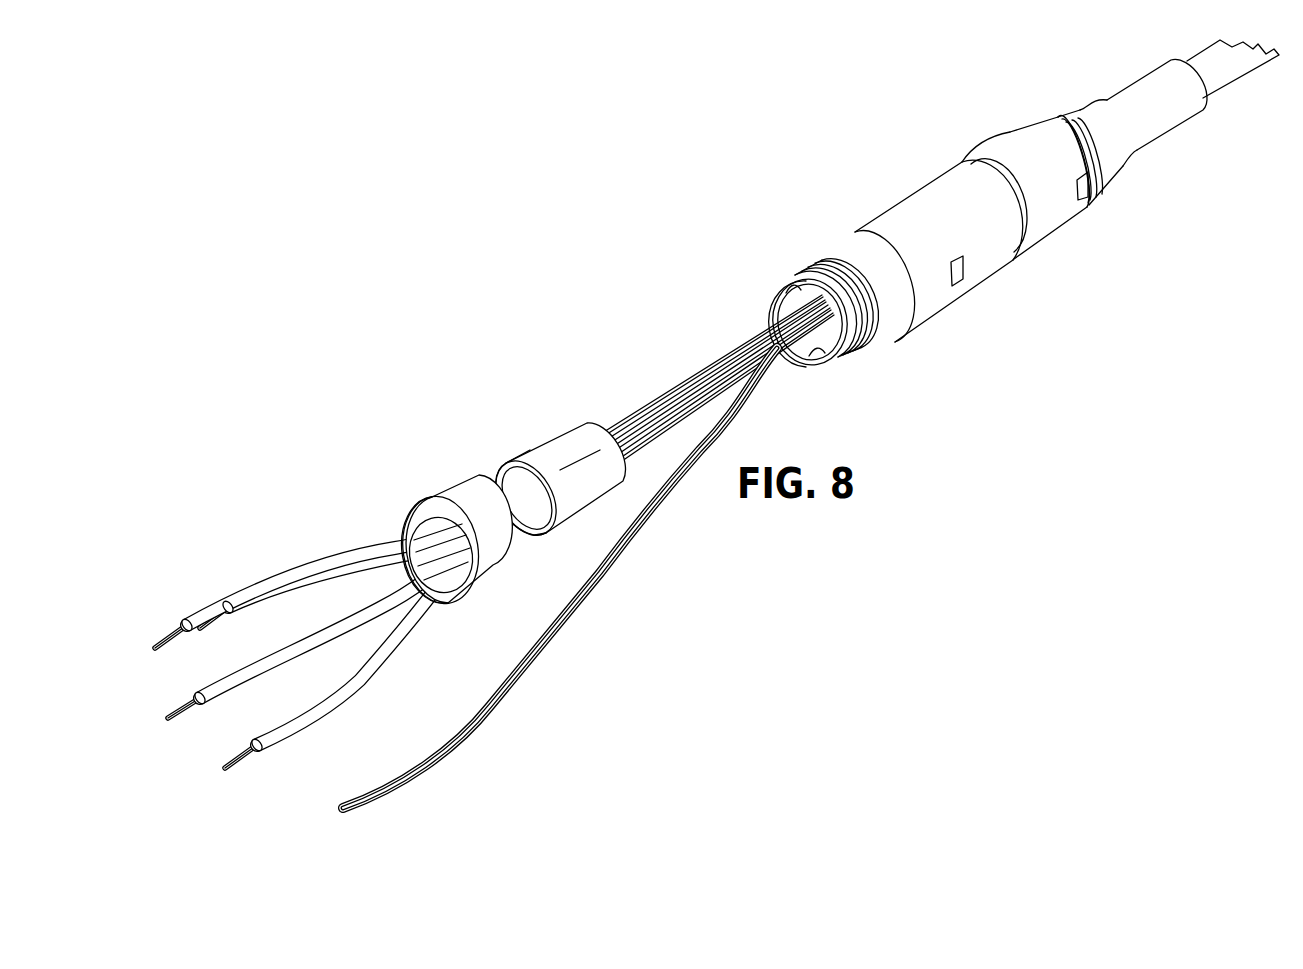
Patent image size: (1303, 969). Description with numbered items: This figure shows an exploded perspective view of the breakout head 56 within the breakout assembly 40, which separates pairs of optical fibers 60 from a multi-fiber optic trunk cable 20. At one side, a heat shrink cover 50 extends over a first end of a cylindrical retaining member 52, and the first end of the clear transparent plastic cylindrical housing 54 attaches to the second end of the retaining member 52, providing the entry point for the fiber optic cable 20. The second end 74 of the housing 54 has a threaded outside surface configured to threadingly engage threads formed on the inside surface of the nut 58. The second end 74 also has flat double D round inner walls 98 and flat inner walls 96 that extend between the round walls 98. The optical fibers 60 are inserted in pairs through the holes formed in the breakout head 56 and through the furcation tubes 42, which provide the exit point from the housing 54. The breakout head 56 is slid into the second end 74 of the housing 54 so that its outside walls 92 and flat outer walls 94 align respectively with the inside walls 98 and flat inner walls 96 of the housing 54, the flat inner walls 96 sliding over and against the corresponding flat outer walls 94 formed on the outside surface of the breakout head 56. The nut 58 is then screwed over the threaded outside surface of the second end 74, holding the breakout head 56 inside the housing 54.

The multi-fiber optic cable 20 is at (1240, 80).
The breakout assembly 40 is at (701, 232).
The furcation tubes 42 is at (293, 568).
The heat shrink cover 50 is at (1173, 127).
The retaining member 52 is at (1038, 121).
The housing 54 is at (963, 287).
The breakout head 56 is at (554, 482).
The nut 58 is at (436, 498).
The optical fibers 60 is at (165, 643).
The second end 74 is at (796, 272).
The outside walls 92 is at (590, 490).
The flat outer walls 94 is at (547, 455).
The flat inner walls 96 is at (790, 288).
The round inner walls 98 is at (773, 312).